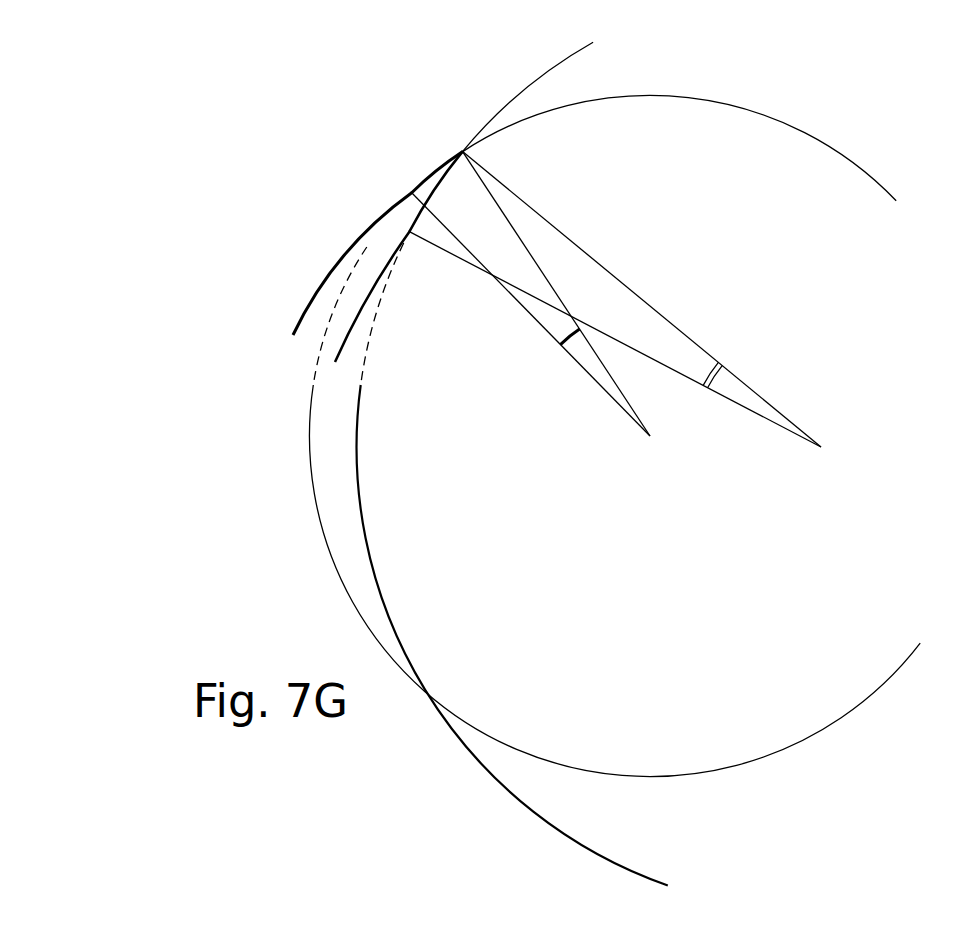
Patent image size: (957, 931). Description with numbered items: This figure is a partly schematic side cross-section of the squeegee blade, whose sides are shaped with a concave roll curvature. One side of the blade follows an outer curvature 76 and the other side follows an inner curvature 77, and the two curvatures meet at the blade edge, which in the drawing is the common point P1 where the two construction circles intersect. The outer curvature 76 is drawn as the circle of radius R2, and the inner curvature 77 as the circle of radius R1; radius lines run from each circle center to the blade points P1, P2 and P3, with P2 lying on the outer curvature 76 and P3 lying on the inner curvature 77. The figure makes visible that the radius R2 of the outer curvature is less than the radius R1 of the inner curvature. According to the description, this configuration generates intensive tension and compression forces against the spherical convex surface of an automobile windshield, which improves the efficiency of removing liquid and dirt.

The outer curvature 76 is at (707, 98).
The inner curvature 77 is at (572, 58).
The radius of inner curvature R1 is at (585, 250).
The radius of outer curvature R2 is at (504, 297).
The point P1 is at (462, 147).
The point P2 is at (410, 191).
The point P3 is at (409, 231).